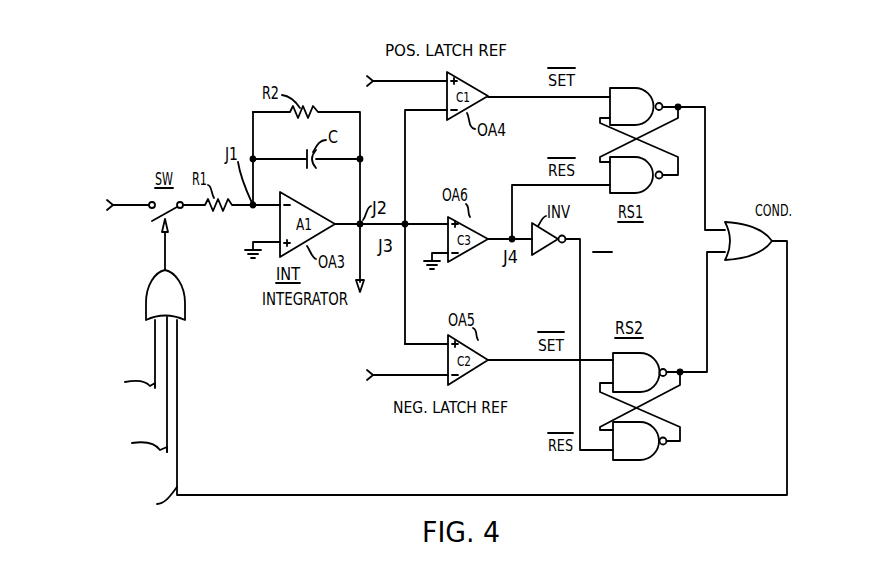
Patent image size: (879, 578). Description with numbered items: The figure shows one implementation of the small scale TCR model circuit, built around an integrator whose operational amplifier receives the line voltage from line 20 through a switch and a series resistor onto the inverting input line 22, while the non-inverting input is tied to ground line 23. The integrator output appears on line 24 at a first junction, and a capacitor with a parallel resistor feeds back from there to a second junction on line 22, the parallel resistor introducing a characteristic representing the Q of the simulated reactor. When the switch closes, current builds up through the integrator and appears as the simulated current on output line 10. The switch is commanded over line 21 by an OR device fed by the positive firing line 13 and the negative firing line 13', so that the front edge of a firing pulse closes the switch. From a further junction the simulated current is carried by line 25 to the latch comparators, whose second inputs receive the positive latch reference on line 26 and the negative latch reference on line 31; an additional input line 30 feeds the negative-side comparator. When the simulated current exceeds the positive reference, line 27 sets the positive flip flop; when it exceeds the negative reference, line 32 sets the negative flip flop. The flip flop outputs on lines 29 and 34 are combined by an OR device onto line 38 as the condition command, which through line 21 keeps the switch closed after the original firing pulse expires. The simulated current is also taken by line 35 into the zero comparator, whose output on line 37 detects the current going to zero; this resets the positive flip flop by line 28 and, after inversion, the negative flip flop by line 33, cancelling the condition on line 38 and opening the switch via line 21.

The output line 10 is at (363, 255).
The positive firing line 13 is at (126, 342).
The negative firing line 13' is at (142, 396).
The line voltage line 20 is at (131, 200).
The switch control line 21 is at (167, 247).
The inverting input line 22 is at (267, 208).
The ground line 23 is at (250, 243).
The integrator output line 24 is at (357, 216).
The comparator input line 25 is at (405, 130).
The positive latch reference line 26 is at (402, 87).
The positive comparator output line 27 is at (531, 96).
The positive reset line 28 is at (531, 183).
The positive condition output line 29 is at (708, 146).
The comparator C2 non-inverting input line 30 is at (405, 311).
The negative latch reference line 31 is at (411, 374).
The negative comparator output line 32 is at (518, 358).
The negative reset line 33 is at (578, 376).
The negative condition output line 34 is at (708, 297).
The zero detection line 35 is at (440, 222).
The comparator C3 output line 37 is at (506, 236).
The condition line 38 is at (786, 322).